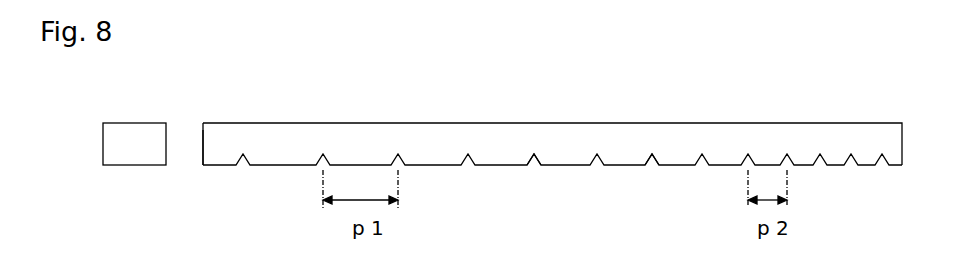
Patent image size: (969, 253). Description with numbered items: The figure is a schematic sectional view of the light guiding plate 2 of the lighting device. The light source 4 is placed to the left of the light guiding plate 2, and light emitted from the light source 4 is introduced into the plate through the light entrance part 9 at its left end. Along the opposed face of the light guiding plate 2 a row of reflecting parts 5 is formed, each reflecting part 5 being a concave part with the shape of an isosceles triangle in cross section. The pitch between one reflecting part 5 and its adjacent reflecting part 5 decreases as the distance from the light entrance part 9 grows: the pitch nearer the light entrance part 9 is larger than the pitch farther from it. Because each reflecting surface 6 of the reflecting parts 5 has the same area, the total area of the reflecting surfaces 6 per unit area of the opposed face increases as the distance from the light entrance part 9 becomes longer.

The light guiding plate 2 is at (290, 123).
The light source 4 is at (129, 165).
The light entrance part 9 is at (203, 150).
The reflecting part 5 is at (533, 169).
The reflecting surface 6 is at (648, 161).